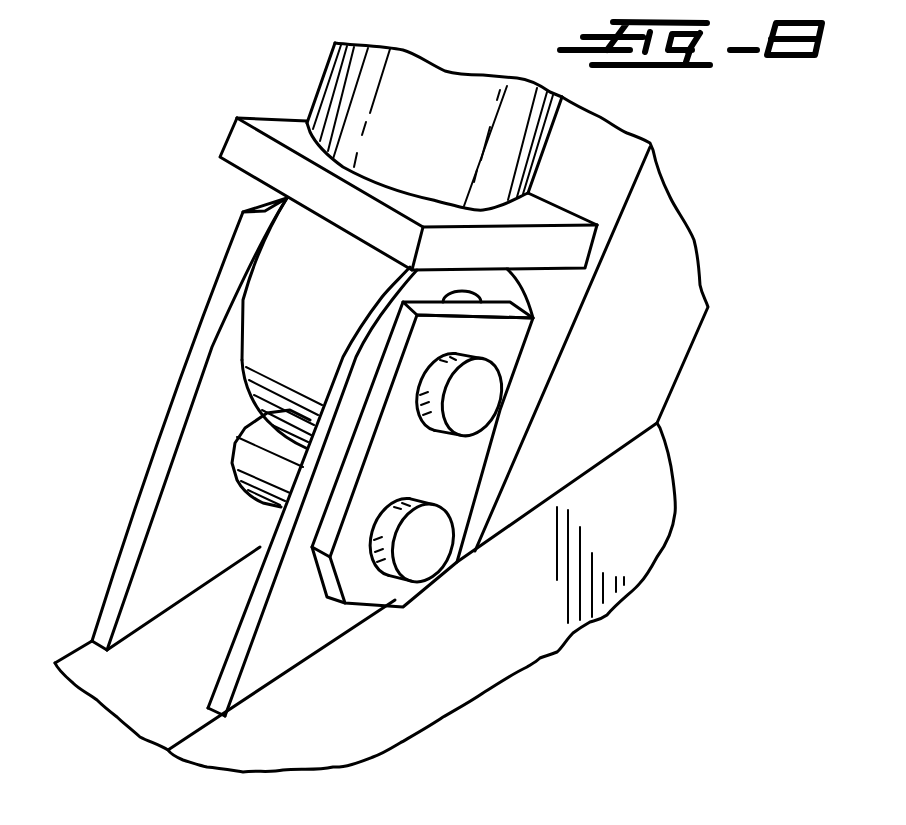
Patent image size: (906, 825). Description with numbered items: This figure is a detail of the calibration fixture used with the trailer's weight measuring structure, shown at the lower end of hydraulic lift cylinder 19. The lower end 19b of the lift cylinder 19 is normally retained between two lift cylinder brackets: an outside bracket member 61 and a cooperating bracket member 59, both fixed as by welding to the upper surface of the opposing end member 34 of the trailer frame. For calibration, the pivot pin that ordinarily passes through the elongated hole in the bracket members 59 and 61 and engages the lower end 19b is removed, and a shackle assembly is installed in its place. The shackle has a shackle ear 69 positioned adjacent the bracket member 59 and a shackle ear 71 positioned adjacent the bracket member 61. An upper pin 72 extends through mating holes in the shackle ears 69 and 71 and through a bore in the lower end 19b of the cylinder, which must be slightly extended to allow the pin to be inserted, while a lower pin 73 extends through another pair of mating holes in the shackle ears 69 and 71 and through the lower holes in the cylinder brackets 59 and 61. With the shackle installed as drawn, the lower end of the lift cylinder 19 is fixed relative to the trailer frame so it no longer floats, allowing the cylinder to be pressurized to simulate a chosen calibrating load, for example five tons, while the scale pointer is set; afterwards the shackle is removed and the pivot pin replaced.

The hydraulic lift cylinder 19 is at (330, 71).
The lower end of hydraulic lift cylinder 19b is at (263, 317).
The end member 34 is at (127, 707).
The bracket member 59 is at (170, 428).
The bracket member 61 is at (287, 653).
The shackle ear 69 is at (243, 226).
The shackle ear 71 is at (463, 470).
The upper pin 72 is at (485, 398).
The lower pin 73 is at (247, 498).